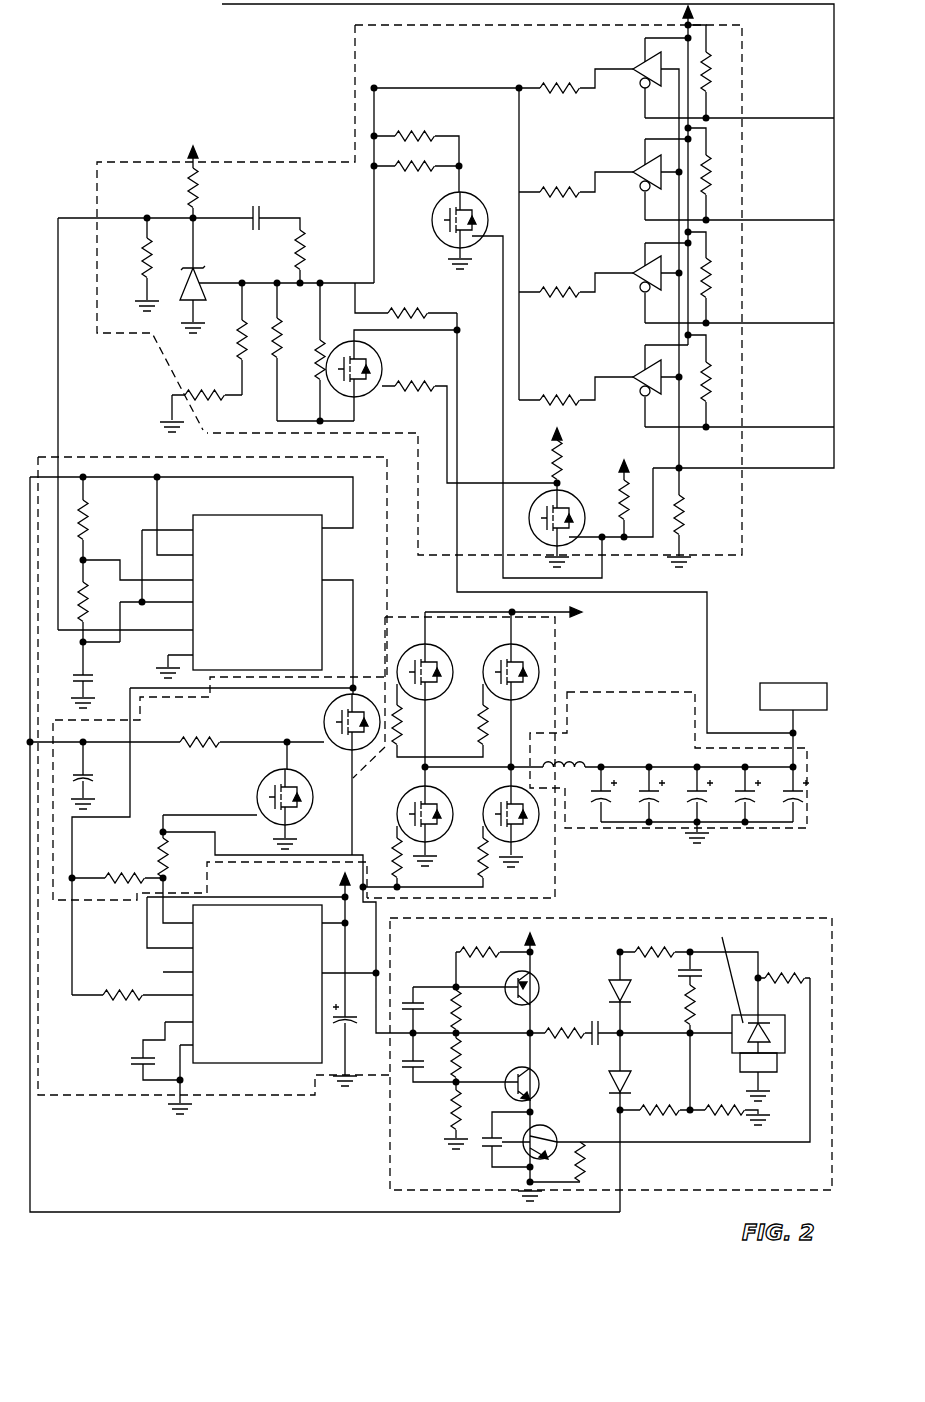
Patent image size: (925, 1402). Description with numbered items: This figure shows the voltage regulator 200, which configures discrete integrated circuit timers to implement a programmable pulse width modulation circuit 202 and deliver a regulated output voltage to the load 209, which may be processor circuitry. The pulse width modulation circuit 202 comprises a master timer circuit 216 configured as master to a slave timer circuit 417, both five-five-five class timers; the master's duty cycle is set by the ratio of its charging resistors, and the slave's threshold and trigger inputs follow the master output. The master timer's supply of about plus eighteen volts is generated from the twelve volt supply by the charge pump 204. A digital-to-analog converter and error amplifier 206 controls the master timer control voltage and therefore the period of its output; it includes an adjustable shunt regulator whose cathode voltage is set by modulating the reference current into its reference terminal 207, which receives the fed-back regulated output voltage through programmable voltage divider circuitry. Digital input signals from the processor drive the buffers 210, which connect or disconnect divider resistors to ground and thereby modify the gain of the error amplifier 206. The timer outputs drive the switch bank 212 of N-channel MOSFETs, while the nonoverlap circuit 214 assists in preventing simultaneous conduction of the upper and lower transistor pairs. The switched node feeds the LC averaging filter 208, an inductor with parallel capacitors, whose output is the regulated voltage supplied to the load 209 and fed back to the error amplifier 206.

The voltage regulator 200 is at (133, 70).
The pulse width modulation circuit 202 is at (391, 578).
The charge pump 204 is at (700, 918).
The DAC and error amplifier 206 is at (745, 507).
The reference terminal 207 is at (220, 282).
The averaging filter 208 is at (615, 690).
The load 209 is at (763, 711).
The buffers 210 is at (637, 62).
The switch bank 212 is at (555, 658).
The nonoverlap circuit 214 is at (87, 902).
The timer integrated circuit 216 is at (265, 513).
The timer integrated circuit 417 is at (270, 1091).